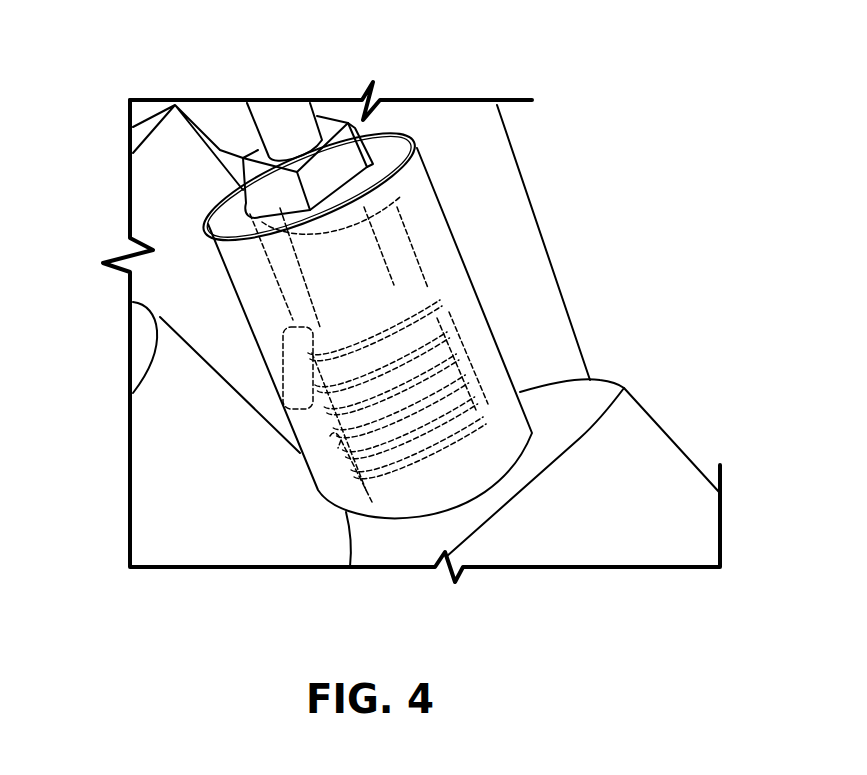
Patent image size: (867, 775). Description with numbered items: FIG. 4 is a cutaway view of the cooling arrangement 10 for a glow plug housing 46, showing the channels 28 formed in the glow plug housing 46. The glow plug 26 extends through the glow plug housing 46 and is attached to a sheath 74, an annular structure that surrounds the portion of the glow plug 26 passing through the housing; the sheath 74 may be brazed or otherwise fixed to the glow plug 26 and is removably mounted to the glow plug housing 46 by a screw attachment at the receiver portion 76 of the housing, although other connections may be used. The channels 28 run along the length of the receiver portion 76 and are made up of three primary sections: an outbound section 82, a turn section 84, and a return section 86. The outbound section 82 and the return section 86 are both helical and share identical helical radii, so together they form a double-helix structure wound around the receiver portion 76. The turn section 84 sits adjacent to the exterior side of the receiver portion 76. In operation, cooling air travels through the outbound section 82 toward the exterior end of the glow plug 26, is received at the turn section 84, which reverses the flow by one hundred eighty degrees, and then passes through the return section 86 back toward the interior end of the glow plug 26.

The fastener assembly 10 is at (87, 138).
The glow plug 26 is at (258, 121).
The sheath 74 is at (350, 123).
The glow plug housing 46 is at (417, 148).
The channels 28 is at (487, 357).
The receiver portion 76 is at (430, 297).
The outbound section 82 is at (462, 470).
The turn section 84 is at (333, 393).
The return section 86 is at (353, 490).